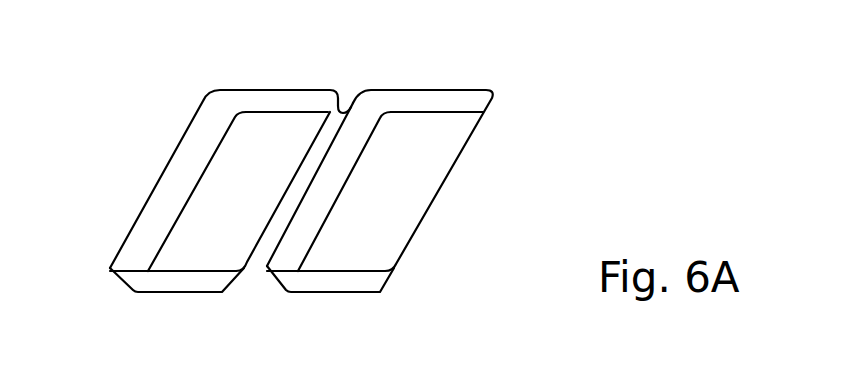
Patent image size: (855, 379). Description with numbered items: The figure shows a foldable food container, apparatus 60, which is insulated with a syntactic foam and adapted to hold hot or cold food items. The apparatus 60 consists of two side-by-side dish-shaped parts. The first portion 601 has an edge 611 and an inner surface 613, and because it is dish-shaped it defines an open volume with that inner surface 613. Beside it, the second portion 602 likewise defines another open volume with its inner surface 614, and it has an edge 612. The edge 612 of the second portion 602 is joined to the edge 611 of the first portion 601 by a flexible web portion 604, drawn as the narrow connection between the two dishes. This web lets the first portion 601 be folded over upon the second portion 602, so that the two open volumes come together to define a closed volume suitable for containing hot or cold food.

The apparatus 60 is at (327, 194).
The first portion 601 is at (204, 189).
The second portion 602 is at (425, 191).
The flexible web portion 604 is at (259, 246).
The edge 611 is at (315, 138).
The edge 612 is at (347, 132).
The inner surface 613 is at (235, 158).
The inner surface 614 is at (438, 143).